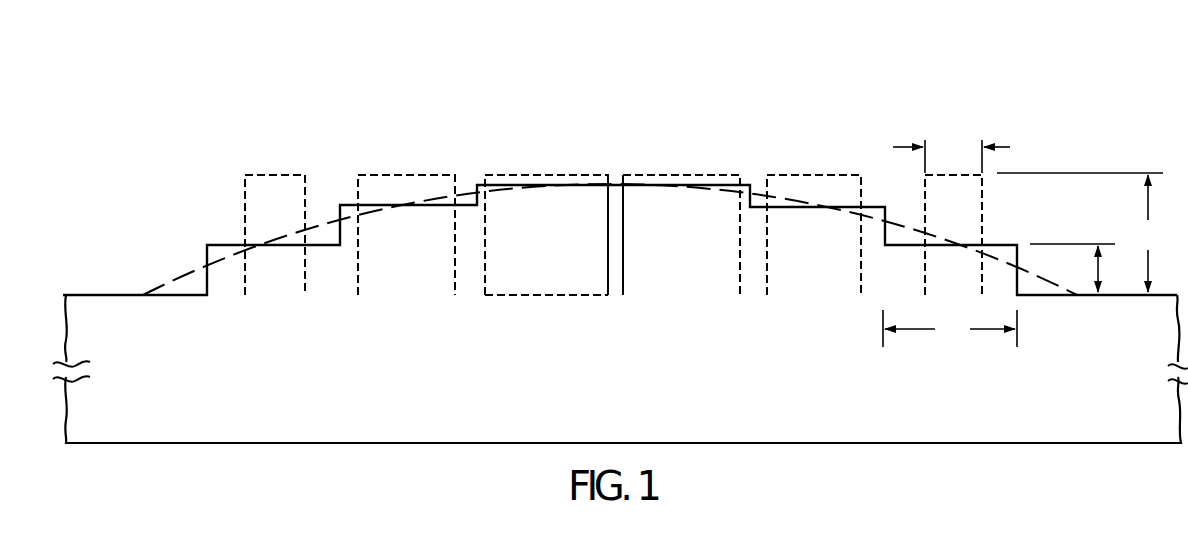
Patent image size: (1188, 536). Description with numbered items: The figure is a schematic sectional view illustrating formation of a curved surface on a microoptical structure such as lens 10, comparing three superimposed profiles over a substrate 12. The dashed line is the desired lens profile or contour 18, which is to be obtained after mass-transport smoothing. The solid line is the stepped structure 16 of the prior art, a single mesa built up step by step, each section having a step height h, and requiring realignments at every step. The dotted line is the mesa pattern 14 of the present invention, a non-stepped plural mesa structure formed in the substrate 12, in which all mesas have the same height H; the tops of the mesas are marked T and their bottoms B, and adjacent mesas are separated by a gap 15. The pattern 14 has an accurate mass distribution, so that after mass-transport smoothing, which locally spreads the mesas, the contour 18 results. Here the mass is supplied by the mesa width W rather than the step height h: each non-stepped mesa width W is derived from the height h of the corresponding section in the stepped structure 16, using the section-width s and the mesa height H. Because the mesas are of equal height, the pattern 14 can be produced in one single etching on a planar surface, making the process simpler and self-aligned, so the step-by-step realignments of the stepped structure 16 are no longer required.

The lens 10 is at (613, 188).
The substrate 12 is at (630, 394).
The mesa pattern 14 is at (411, 170).
The gap between mesas 15 is at (616, 170).
The stepped structure 16 is at (337, 201).
The lens contour 18 is at (190, 268).
The mesa top T is at (437, 175).
The mesa bottom B is at (475, 295).
The mesa width W is at (951, 155).
The height H is at (1080, 232).
The step height h is at (1074, 268).
The section-width s is at (950, 328).